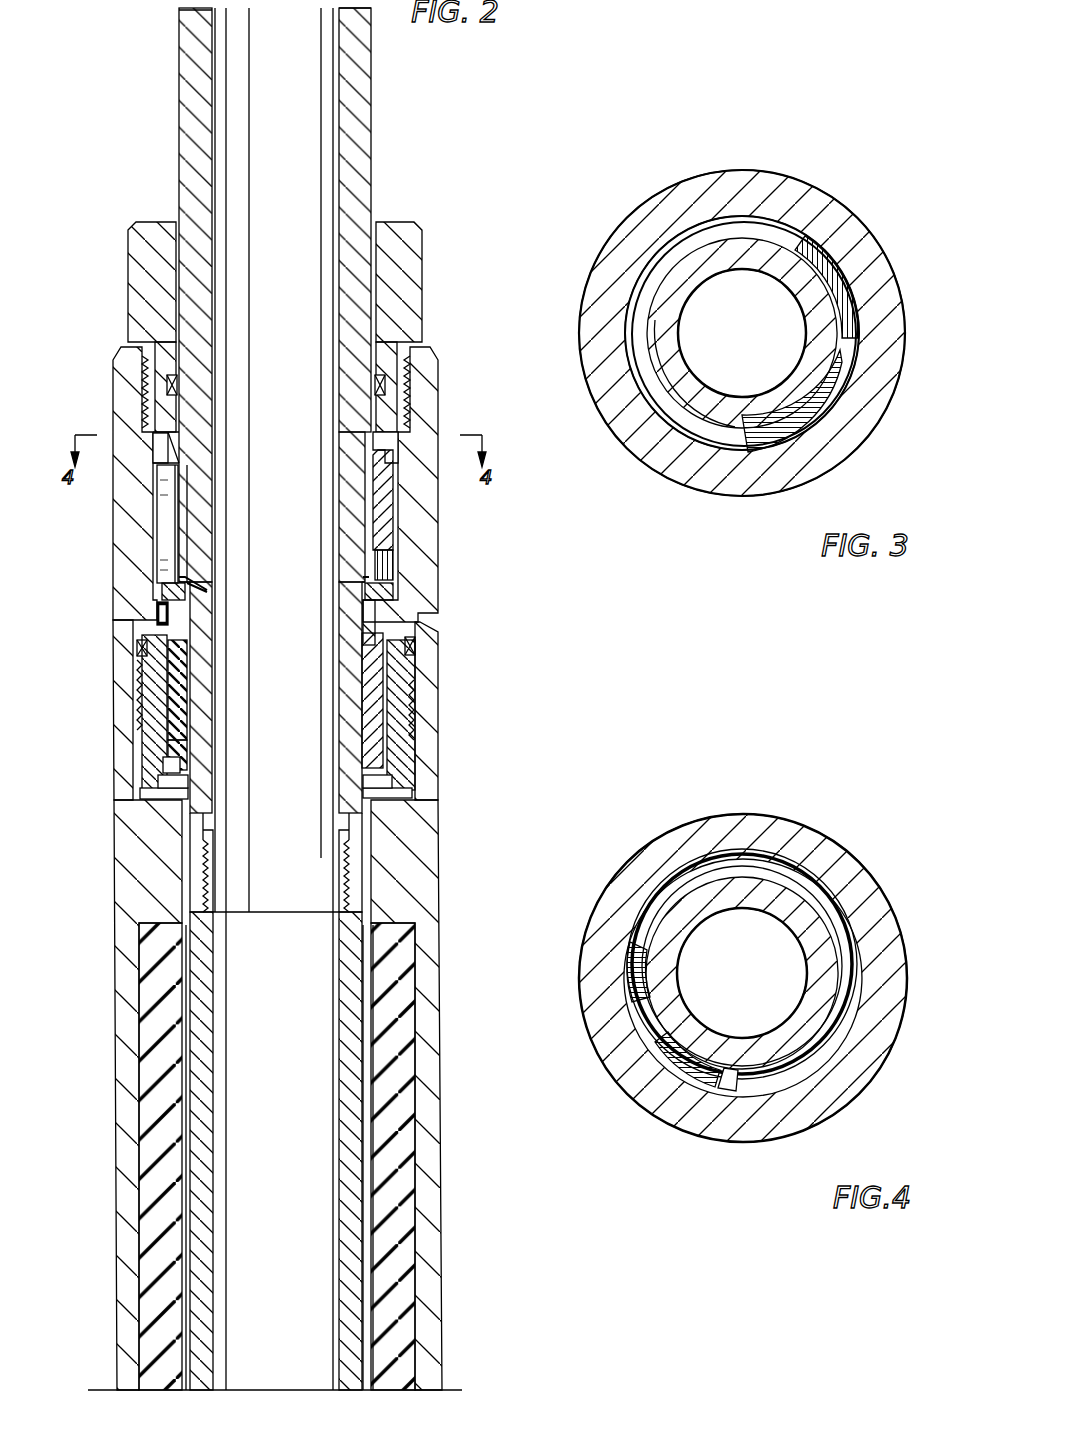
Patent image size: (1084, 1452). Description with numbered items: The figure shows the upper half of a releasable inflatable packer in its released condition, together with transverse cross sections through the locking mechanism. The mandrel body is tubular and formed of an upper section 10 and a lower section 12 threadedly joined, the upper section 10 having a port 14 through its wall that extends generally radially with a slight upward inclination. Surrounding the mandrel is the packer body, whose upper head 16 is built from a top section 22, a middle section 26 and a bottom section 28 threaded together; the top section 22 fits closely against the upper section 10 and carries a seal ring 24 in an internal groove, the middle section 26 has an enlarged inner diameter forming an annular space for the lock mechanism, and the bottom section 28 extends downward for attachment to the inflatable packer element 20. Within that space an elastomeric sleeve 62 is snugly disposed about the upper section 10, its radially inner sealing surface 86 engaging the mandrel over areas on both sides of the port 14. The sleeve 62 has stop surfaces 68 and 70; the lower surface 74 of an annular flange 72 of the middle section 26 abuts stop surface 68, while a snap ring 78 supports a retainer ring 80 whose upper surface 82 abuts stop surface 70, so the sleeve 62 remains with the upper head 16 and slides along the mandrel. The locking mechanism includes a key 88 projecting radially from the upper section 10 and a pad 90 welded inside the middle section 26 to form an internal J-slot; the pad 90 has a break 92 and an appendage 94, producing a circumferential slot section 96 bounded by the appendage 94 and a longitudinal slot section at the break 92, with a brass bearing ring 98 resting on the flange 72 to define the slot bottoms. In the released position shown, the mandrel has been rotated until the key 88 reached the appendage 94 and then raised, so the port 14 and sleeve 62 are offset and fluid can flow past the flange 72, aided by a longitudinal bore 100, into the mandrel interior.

In FIG. 2, the upper section 10 is at (355, 107).
In FIG. 3, the upper section 10 is at (750, 260).
In FIG. 4, the upper section 10 is at (755, 895).
In FIG. 2, the lower section 12 is at (345, 1096).
In FIG. 2, the port 14 is at (206, 585).
In FIG. 2, the upper head 16 is at (449, 718).
In FIG. 2, the inflatable packer element 20 is at (400, 1056).
In FIG. 2, the top section 22 is at (425, 243).
In FIG. 2, the seal ring 24 is at (374, 383).
In FIG. 2, the middle section 26 is at (437, 364).
In FIG. 3, the middle section 26 is at (737, 490).
In FIG. 4, the middle section 26 is at (777, 830).
In FIG. 2, the bottom section 28 is at (420, 882).
In FIG. 2, the sleeve 62 is at (188, 727).
In FIG. 2, the stop surface 68 is at (138, 646).
In FIG. 2, the stop surface 70 is at (172, 764).
In FIG. 2, the annular flange 72 is at (368, 619).
In FIG. 2, the lower surface 74 is at (388, 656).
In FIG. 2, the snap ring 78 is at (382, 790).
In FIG. 2, the retainer ring 80 is at (150, 796).
In FIG. 2, the upper surface 82 is at (382, 757).
In FIG. 2, the sealing surface 86 is at (188, 672).
In FIG. 2, the key 88 is at (170, 446).
In FIG. 3, the key 88 is at (820, 408).
In FIG. 4, the key 88 is at (655, 1040).
In FIG. 2, the pad 90 is at (385, 512).
In FIG. 4, the pad 90 is at (845, 1037).
In FIG. 2, the break 92 is at (160, 522).
In FIG. 4, the break 92 is at (735, 1088).
In FIG. 3, the appendage 94 is at (850, 280).
In FIG. 2, the slot section 96 is at (392, 562).
In FIG. 2, the bearing ring 98 is at (398, 591).
In FIG. 3, the bearing ring 98 is at (700, 230).
In FIG. 2, the longitudinal bore 100 is at (158, 612).